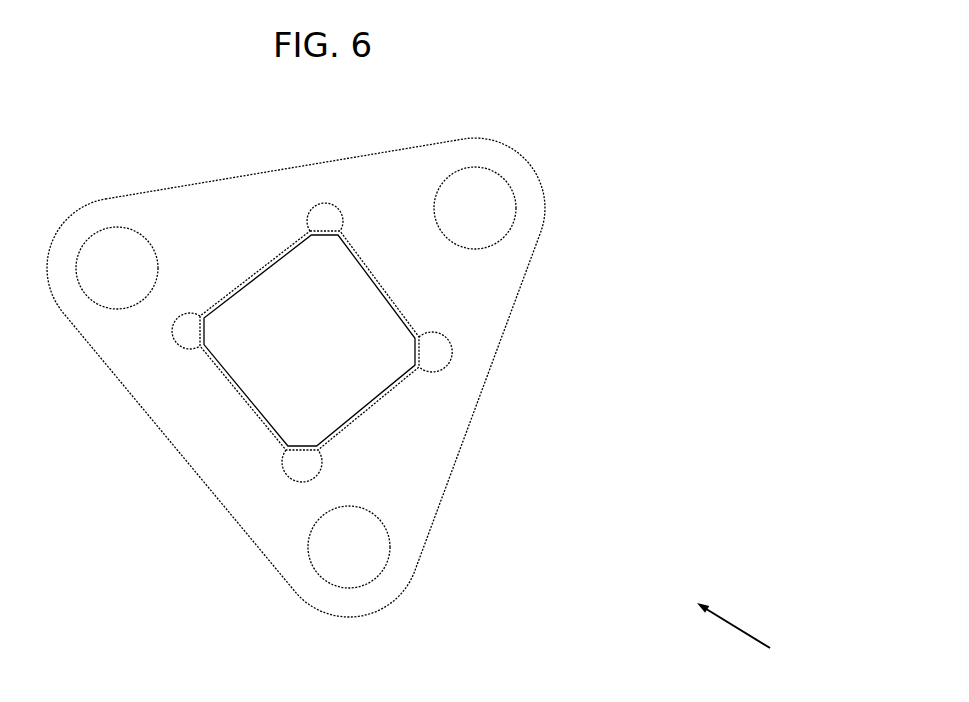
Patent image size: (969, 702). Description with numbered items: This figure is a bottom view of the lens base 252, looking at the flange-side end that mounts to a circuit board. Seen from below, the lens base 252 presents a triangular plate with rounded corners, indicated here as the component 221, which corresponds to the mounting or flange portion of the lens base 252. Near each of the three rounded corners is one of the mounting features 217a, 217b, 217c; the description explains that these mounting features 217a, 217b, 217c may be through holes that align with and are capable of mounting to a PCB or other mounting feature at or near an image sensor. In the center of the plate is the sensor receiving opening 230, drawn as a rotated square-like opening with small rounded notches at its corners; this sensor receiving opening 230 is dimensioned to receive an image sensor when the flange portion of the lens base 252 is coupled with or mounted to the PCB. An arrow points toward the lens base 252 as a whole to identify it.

The mounting plate 221 is at (220, 197).
The mounting feature 217a is at (93, 297).
The mounting feature 217b is at (500, 178).
The mounting feature 217c is at (387, 560).
The sensor receiving opening 230 is at (255, 407).
The lens base 252 is at (757, 635).